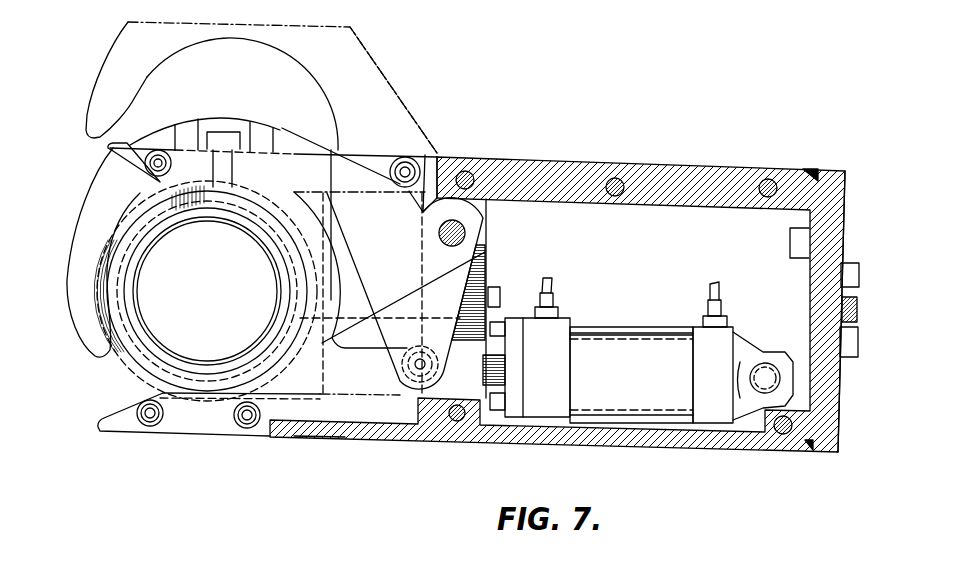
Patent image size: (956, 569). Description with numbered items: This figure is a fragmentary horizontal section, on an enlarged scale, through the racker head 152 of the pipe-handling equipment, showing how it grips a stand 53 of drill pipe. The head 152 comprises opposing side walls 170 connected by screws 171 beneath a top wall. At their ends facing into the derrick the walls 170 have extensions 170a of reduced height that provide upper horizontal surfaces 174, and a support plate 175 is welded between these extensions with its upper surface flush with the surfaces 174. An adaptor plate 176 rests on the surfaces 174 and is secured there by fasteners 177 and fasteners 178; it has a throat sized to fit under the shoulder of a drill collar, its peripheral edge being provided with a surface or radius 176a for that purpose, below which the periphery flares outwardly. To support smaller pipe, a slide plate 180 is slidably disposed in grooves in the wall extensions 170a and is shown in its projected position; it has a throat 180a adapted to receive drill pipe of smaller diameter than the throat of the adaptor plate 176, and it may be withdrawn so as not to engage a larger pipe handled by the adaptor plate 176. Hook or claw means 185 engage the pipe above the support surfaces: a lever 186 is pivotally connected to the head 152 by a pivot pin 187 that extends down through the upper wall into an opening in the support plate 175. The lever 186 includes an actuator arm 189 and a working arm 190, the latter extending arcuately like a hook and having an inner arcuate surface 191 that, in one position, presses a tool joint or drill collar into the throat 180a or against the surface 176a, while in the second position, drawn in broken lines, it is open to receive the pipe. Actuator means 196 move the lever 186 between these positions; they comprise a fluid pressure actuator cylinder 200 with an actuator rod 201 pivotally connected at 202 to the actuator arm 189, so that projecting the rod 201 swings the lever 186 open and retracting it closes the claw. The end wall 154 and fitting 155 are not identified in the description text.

The stands of drill pipe 53 is at (147, 370).
The racker head 152 is at (545, 141).
The end wall 154 is at (838, 450).
The fitting 155 is at (863, 303).
The side walls 170 is at (560, 163).
The wall extensions 170a is at (363, 145).
The screws 171 is at (768, 180).
The upper horizontal surfaces 174 is at (410, 157).
The support plate 175 is at (484, 270).
The adaptor plate 176 is at (312, 422).
The throat surface 176a is at (293, 343).
The fasteners 177 is at (233, 418).
The fasteners 178 is at (143, 172).
The slide plate 180 is at (290, 284).
The throat 180a is at (267, 252).
The claw means 185 is at (322, 95).
The lever 186 is at (440, 160).
The pivot pin 187 is at (463, 226).
The actuator arm 189 is at (462, 278).
The working arm 190 is at (163, 133).
The inner arcuate surface 191 is at (137, 284).
The actuator means 196 is at (630, 328).
The actuator cylinder 200 is at (649, 350).
The actuator rod 201 is at (471, 400).
The pivotal connection 202 is at (417, 378).